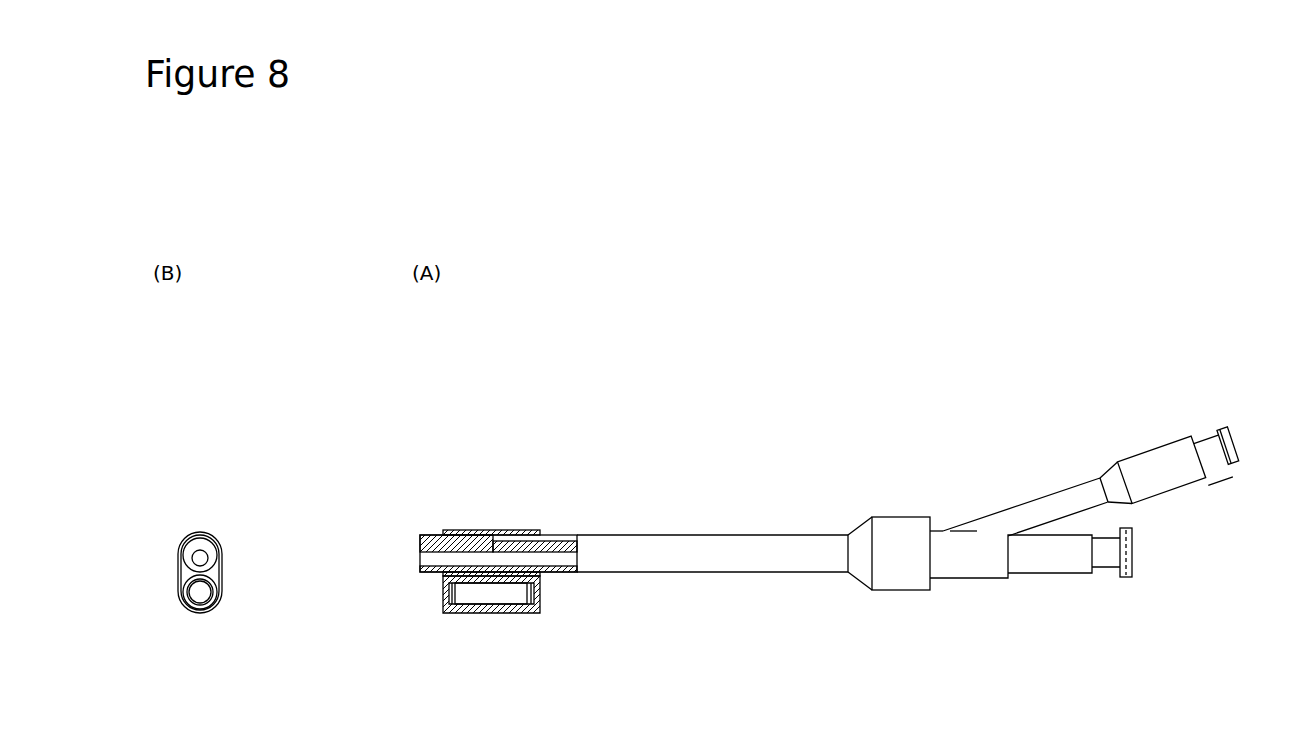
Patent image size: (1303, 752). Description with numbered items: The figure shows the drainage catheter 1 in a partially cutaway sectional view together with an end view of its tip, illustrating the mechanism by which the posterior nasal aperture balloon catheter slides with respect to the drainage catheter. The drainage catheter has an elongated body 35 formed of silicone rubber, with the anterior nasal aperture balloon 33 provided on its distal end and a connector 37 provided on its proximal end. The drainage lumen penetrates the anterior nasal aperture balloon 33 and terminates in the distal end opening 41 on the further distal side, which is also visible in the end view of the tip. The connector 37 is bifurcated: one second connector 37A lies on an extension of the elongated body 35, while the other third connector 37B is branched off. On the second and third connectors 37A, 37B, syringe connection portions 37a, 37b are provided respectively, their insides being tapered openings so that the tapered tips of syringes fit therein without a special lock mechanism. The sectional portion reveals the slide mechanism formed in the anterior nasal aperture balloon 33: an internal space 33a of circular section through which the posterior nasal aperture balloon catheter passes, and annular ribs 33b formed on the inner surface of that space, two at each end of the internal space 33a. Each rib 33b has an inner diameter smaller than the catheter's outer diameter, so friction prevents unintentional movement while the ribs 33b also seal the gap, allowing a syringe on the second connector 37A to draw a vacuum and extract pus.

The catheter assembly 1 is at (1026, 360).
The anterior nasal aperture balloon 33 is at (467, 617).
The internal space 33a is at (478, 584).
The annular rib 33b is at (443, 592).
The elongated body 35 is at (722, 545).
The connector 37 is at (1085, 426).
The second connector 37A is at (1063, 552).
The third connector 37B is at (1150, 458).
The syringe connection portion 37a is at (1127, 578).
The syringe connection portion 37b is at (1229, 463).
The distal end opening 41 is at (420, 557).